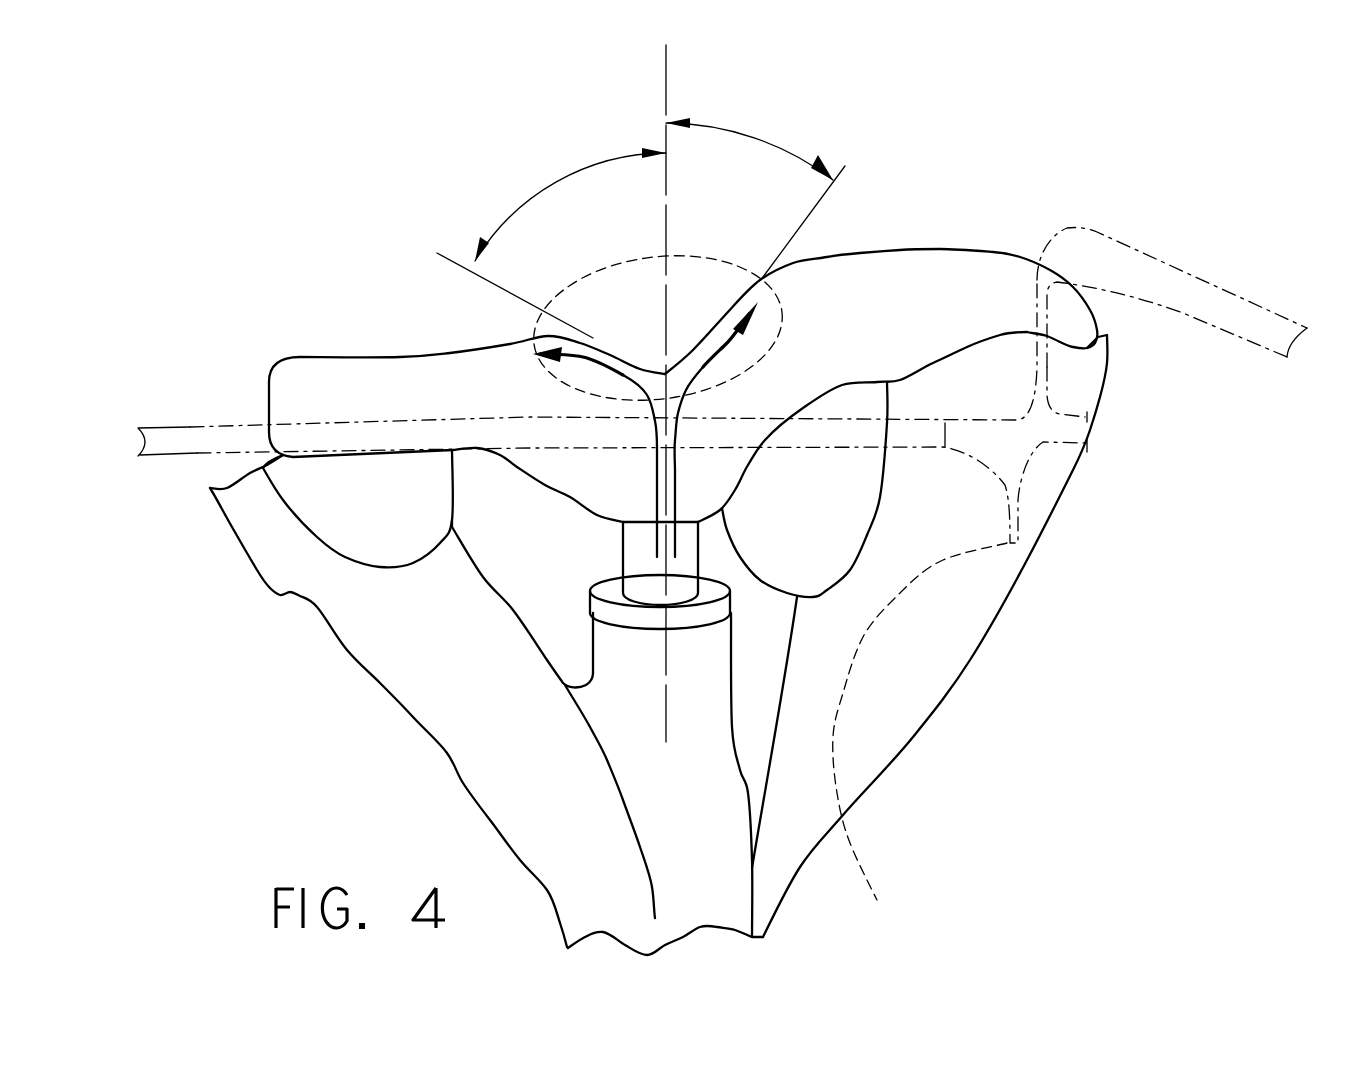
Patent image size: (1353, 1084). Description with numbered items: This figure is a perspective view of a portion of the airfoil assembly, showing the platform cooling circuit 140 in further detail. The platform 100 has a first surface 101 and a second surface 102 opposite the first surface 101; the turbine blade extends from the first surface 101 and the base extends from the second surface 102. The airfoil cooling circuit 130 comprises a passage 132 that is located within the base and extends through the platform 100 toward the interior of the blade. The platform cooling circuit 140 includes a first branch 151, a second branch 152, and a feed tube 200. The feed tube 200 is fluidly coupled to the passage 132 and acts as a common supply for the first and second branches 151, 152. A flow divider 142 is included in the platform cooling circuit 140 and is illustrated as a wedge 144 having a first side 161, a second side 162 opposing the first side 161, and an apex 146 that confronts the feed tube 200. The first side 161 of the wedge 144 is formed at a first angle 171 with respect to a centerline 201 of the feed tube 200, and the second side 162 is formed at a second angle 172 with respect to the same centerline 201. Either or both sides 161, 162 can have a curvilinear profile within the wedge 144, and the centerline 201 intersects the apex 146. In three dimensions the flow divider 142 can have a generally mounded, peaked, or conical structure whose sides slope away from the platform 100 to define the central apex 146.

The platform cooling circuit 140 is at (257, 97).
The first branch 151 is at (352, 377).
The second branch 152 is at (960, 268).
The apex 146 is at (657, 373).
The passage 132 is at (353, 597).
The feed tube 200 is at (670, 582).
The centerline 201 is at (665, 688).
The first side 161 is at (600, 338).
The second side 162 is at (740, 308).
The first angle 171 is at (565, 172).
The second angle 172 is at (745, 137).
The flow divider 142 is at (749, 327).
The wedge 144 is at (783, 300).
The airfoil cooling circuit 130 is at (207, 443).
The platform 100 is at (1176, 283).
The first surface 101 is at (1133, 242).
The second surface 102 is at (1185, 315).